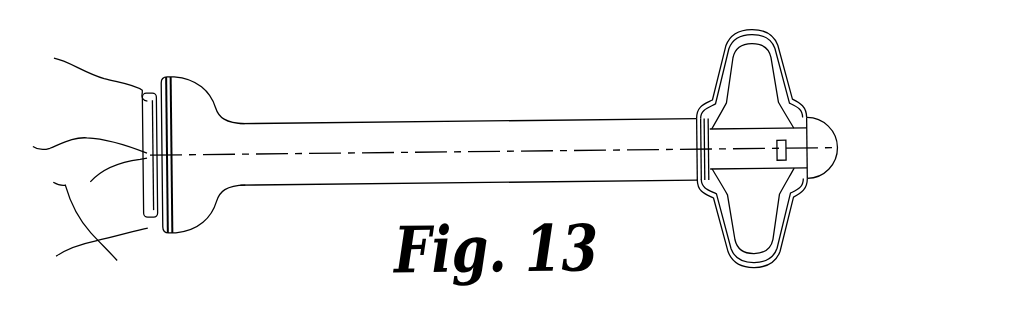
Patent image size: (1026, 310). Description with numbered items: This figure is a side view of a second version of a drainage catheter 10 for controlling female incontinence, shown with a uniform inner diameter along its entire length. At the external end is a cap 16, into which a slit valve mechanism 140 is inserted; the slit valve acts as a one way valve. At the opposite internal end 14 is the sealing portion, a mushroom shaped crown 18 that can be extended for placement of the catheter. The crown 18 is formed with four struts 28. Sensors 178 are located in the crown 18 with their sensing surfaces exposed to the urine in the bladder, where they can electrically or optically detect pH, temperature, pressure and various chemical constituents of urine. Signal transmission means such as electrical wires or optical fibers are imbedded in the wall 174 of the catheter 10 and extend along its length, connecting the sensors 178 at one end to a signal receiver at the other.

The drainage catheter 10 is at (342, 118).
The internal end 14 is at (497, 193).
The cap 16 is at (207, 223).
The crown 18 is at (787, 65).
The struts 28 is at (745, 134).
The slit valve mechanism 140 is at (143, 87).
The wall 174 is at (57, 139).
The sensors 178 is at (790, 145).